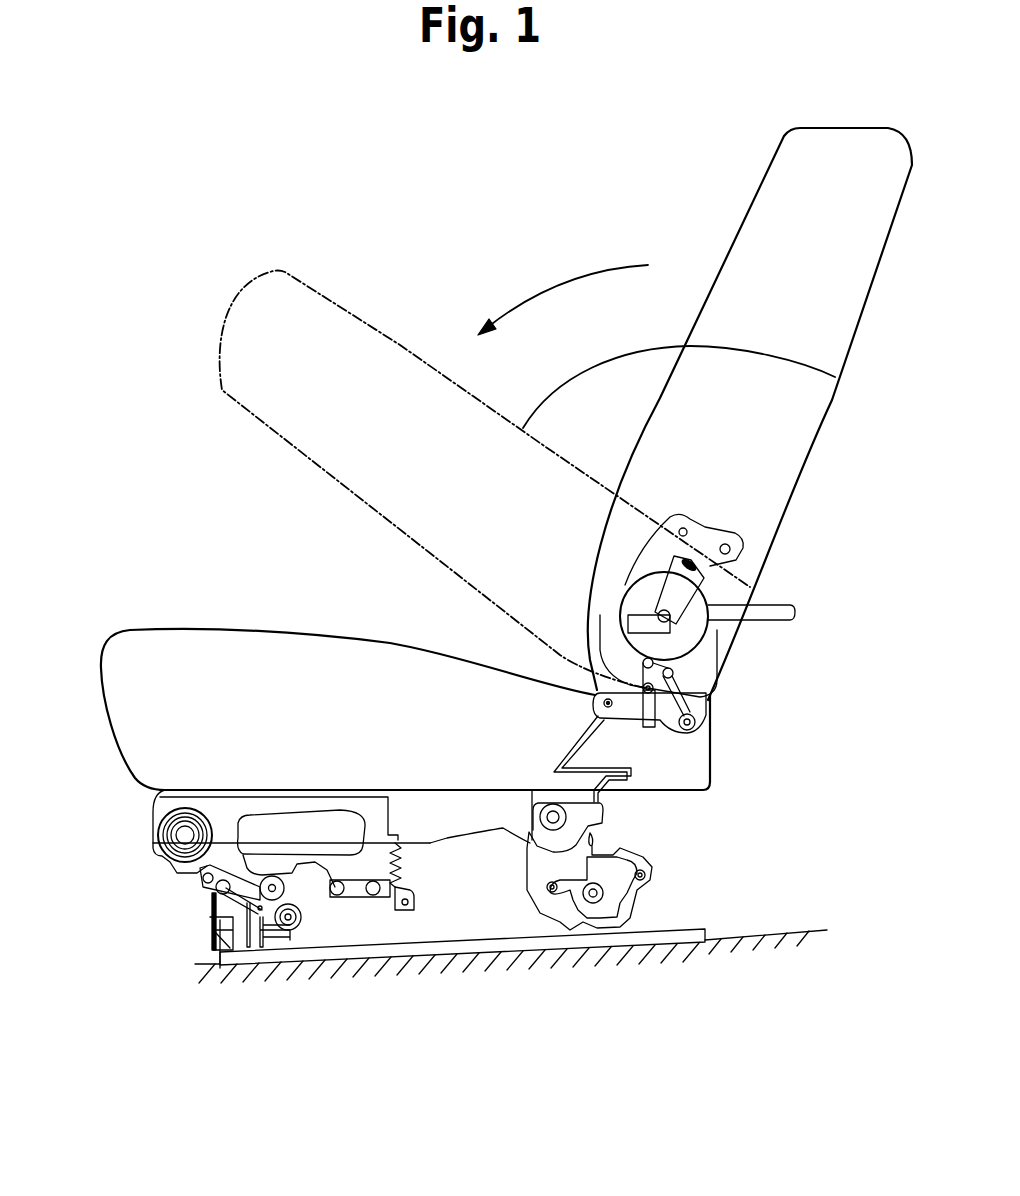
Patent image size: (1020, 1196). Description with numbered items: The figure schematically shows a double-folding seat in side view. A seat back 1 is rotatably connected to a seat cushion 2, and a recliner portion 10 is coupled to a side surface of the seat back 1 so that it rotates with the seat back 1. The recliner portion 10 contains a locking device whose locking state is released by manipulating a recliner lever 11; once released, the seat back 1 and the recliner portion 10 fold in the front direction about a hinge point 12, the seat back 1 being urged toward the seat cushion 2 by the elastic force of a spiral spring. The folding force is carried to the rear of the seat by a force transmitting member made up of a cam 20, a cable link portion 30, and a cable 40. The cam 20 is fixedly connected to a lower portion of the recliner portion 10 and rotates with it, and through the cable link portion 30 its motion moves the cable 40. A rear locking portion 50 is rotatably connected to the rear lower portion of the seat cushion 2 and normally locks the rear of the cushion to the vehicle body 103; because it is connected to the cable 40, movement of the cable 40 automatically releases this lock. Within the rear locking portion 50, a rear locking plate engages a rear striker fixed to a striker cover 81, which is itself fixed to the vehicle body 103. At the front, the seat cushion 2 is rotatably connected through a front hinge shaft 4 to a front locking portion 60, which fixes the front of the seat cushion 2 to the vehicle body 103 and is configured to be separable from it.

The seat back 1 is at (858, 322).
The seat cushion 2 is at (107, 682).
The front hinge shaft 4 is at (163, 840).
The recliner portion 10 is at (740, 560).
The recliner lever 11 is at (800, 612).
The hinge point 12 is at (702, 620).
The cam 20 is at (622, 596).
The cable link portion 30 is at (705, 706).
The cable 40 is at (640, 766).
The rear locking portion 50 is at (674, 882).
The front locking portion 60 is at (180, 940).
The striker cover 81 is at (700, 946).
The vehicle body 103 is at (822, 931).